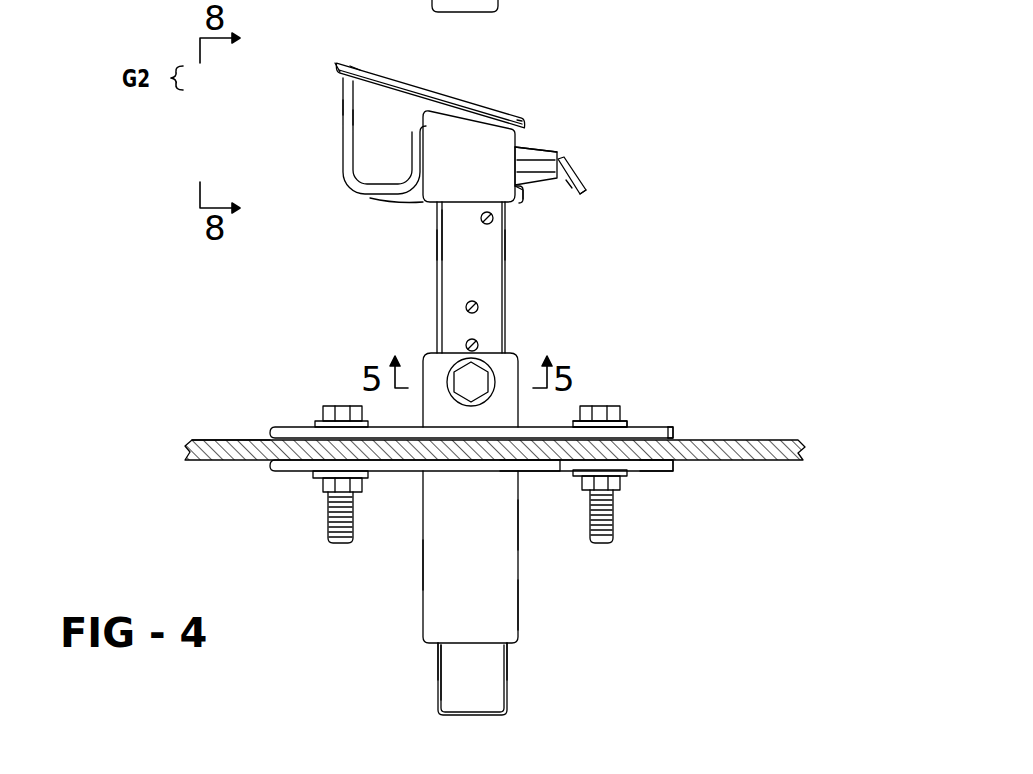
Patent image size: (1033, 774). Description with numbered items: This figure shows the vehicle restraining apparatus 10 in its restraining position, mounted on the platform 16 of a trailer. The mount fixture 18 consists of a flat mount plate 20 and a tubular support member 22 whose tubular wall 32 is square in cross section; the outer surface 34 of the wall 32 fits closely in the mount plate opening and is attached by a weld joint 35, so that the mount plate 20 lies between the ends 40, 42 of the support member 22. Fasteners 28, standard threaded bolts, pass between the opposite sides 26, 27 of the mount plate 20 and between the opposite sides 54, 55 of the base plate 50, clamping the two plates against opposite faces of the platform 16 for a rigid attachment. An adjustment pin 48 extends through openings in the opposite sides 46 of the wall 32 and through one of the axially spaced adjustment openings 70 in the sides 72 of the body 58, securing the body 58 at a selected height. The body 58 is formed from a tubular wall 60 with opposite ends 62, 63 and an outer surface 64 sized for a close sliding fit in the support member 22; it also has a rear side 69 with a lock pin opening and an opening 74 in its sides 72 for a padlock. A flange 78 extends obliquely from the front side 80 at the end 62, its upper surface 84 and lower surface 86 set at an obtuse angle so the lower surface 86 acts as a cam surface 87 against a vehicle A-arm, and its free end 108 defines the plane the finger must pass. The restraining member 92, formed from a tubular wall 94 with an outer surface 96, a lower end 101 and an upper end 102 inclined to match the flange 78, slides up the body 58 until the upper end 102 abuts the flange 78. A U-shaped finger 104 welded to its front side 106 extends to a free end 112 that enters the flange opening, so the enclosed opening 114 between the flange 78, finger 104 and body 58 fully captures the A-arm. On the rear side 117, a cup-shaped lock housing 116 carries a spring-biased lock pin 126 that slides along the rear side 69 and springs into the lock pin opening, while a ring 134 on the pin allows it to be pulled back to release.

The apparatus 10 is at (712, 121).
The platform 16 is at (720, 438).
The mount fixture 18 is at (528, 558).
The mount plate 20 is at (680, 433).
The support member 22 is at (423, 512).
The side of mount plate 26 is at (273, 428).
The side of mount plate 27 is at (252, 438).
The fasteners 28 is at (332, 406).
The tubular wall 32 is at (520, 605).
The outer surface 34 is at (518, 527).
The weld joint 35 is at (520, 424).
The end of support member 40 is at (477, 342).
The end of support member 42 is at (430, 655).
The side of tubular wall 46 is at (422, 565).
The adjustment pin 48 is at (423, 405).
The base plate 50 is at (672, 471).
The side of base plate 54 is at (536, 472).
The side of base plate 55 is at (640, 472).
The body 58 is at (512, 655).
The tubular wall 60 is at (520, 0).
The end of body wall 62 is at (462, 110).
The end of body wall 63 is at (458, 17).
The outer surface 64 is at (457, 667).
The rear side 69 is at (506, 247).
The adjustment openings 70 is at (478, 305).
The side of body 72 is at (447, 283).
The opening 74 is at (493, 218).
The flange 78 is at (497, 112).
The front side 80 is at (437, 243).
The upper surface 84 is at (390, 82).
The lower surface 86 is at (384, 90).
The cam surface 87 is at (343, 107).
The restraining member 92 is at (535, 193).
The tubular wall 94 is at (373, 194).
The outer surface 96 is at (425, 206).
The lower end 101 is at (462, 212).
The upper end 102 is at (549, 142).
The finger 104 is at (353, 117).
The front side 106 is at (425, 145).
The free end of flange 108 is at (340, 70).
The free end of finger 112 is at (353, 68).
The enclosed opening 114 is at (365, 133).
The lock housing 116 is at (562, 150).
The rear side 117 is at (572, 188).
The lock pin 126 is at (564, 161).
The ring 134 is at (585, 186).